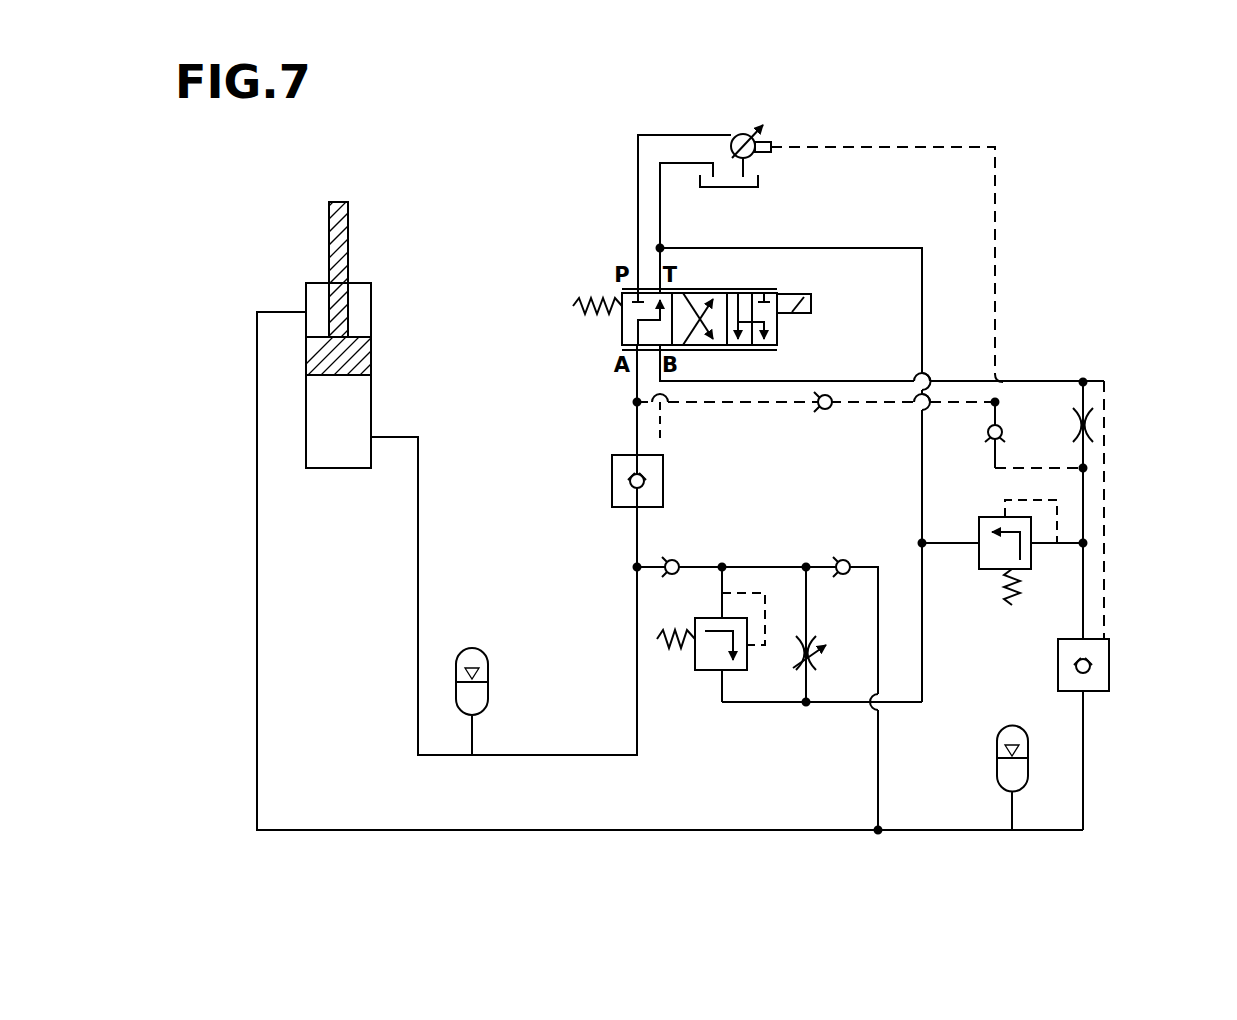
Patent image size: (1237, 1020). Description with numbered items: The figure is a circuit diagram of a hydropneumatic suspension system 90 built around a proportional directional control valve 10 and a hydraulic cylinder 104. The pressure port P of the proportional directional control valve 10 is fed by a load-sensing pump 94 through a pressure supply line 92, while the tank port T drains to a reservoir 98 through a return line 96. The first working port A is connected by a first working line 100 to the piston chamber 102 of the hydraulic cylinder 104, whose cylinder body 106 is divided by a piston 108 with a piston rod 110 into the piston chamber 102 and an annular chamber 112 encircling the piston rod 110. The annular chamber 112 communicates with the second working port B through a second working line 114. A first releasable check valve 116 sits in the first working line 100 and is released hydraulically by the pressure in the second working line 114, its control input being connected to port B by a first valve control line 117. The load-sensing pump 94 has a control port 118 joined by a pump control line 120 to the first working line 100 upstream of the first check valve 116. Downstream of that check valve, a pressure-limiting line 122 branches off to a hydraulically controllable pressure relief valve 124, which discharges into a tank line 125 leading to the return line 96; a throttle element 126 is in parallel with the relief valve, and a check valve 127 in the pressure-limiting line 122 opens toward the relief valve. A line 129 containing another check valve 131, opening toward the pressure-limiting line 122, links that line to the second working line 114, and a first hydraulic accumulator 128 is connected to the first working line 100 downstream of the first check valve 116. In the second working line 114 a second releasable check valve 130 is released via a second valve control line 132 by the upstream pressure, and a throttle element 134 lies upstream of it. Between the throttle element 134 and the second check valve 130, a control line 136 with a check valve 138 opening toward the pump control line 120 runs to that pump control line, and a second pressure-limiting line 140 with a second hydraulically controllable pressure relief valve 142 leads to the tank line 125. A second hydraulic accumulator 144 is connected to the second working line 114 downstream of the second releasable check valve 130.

The proportional directional control valve 10 is at (618, 330).
The hydropneumatic suspension system 90 is at (1056, 176).
The pressure supply line 92 is at (638, 200).
The load-sensing pump 94 is at (745, 134).
The return line 96 is at (660, 202).
The reservoir 98 is at (740, 187).
The first working line 100 is at (637, 635).
The piston chamber 102 is at (333, 445).
The hydraulic cylinder 104 is at (328, 365).
The cylinder body 106 is at (372, 420).
The piston 108 is at (365, 357).
The piston rod 110 is at (338, 245).
The annular chamber 112 is at (313, 298).
The second working line 114 is at (1083, 800).
The first releasable check valve 116 is at (612, 495).
The first valve control line 117 is at (660, 442).
The control port 118 is at (772, 147).
The pump control line 120 is at (1003, 302).
The pressure-limiting line 122 is at (698, 566).
The pressure relief valve 124 is at (705, 670).
The tank line 125 is at (740, 702).
The throttle element 126 is at (815, 641).
The check valve 127 is at (678, 560).
The first hydraulic accumulator 128 is at (488, 700).
The line 129 is at (878, 770).
The second releasable check valve 130 is at (1110, 655).
The check valve 131 is at (843, 560).
The second valve control line 132 is at (1104, 512).
The throttle element 134 is at (1088, 420).
The control line 136 is at (988, 466).
The check valve 138 is at (1000, 428).
The second pressure-limiting line 140 is at (962, 545).
The second pressure relief valve 142 is at (985, 570).
The second hydraulic accumulator 144 is at (997, 770).